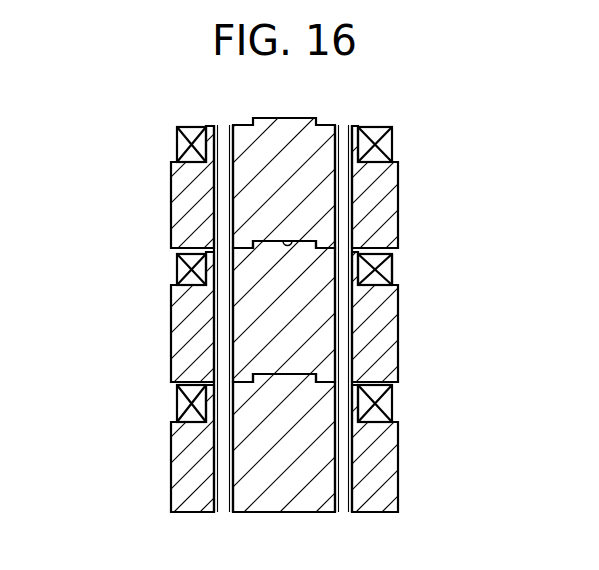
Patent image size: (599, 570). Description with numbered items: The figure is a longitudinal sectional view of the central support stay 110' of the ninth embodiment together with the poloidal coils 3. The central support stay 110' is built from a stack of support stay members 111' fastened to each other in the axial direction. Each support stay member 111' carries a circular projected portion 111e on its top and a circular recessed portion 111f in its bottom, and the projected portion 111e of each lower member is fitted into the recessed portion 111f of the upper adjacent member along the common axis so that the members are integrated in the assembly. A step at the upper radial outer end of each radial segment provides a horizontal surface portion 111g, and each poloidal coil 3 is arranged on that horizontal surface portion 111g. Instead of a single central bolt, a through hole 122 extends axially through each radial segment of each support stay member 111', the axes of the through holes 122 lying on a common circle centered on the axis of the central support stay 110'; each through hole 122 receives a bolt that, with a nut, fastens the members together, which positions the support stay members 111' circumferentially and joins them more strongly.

The central support stay 110' is at (299, 305).
The support stay member 111' is at (299, 305).
The circular projected portion 111e is at (300, 118).
The circular recessed portion 111f is at (298, 240).
The horizontal surface portion 111g is at (392, 279).
The through hole 122 is at (226, 334).
The poloidal coil 3 is at (393, 138).